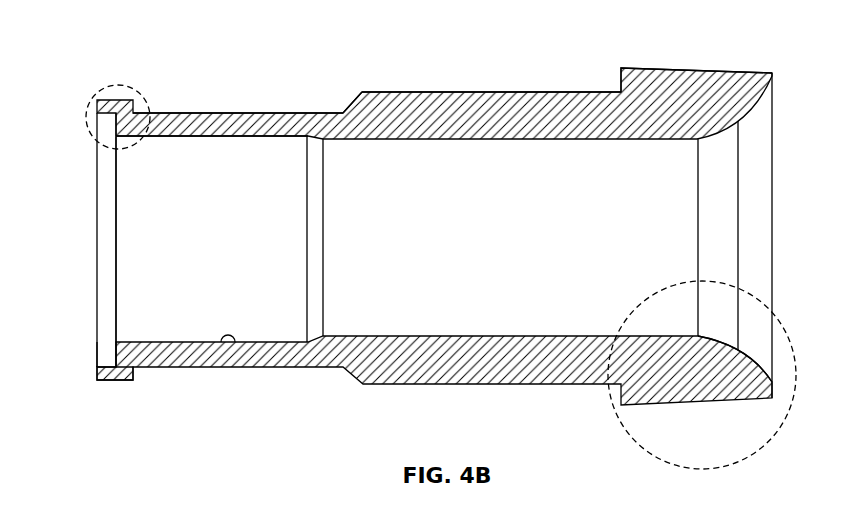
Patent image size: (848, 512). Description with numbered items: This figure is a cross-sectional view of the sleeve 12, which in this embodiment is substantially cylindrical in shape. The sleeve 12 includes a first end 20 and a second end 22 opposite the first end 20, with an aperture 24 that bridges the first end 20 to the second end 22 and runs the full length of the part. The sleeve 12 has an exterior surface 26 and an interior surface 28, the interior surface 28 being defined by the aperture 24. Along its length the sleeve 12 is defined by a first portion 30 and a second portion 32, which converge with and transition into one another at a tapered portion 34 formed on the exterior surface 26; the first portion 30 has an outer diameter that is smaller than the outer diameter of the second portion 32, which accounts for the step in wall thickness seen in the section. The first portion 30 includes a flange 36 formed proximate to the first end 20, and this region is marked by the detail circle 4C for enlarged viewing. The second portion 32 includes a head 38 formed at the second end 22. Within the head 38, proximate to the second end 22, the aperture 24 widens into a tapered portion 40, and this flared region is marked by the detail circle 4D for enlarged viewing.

The sleeve 12 is at (99, 60).
The first end 20 is at (97, 372).
The second end 22 is at (772, 73).
The aperture 24 is at (130, 240).
The exterior surface 26 is at (245, 110).
The interior surface 28 is at (220, 342).
The first portion 30 is at (201, 119).
The second portion 32 is at (417, 99).
The tapered portion 34 is at (351, 100).
The flange 36 is at (104, 350).
The head 38 is at (736, 78).
The tapered portion 40 is at (723, 346).
The detail circle 4C is at (120, 85).
The detail circle 4D is at (704, 470).